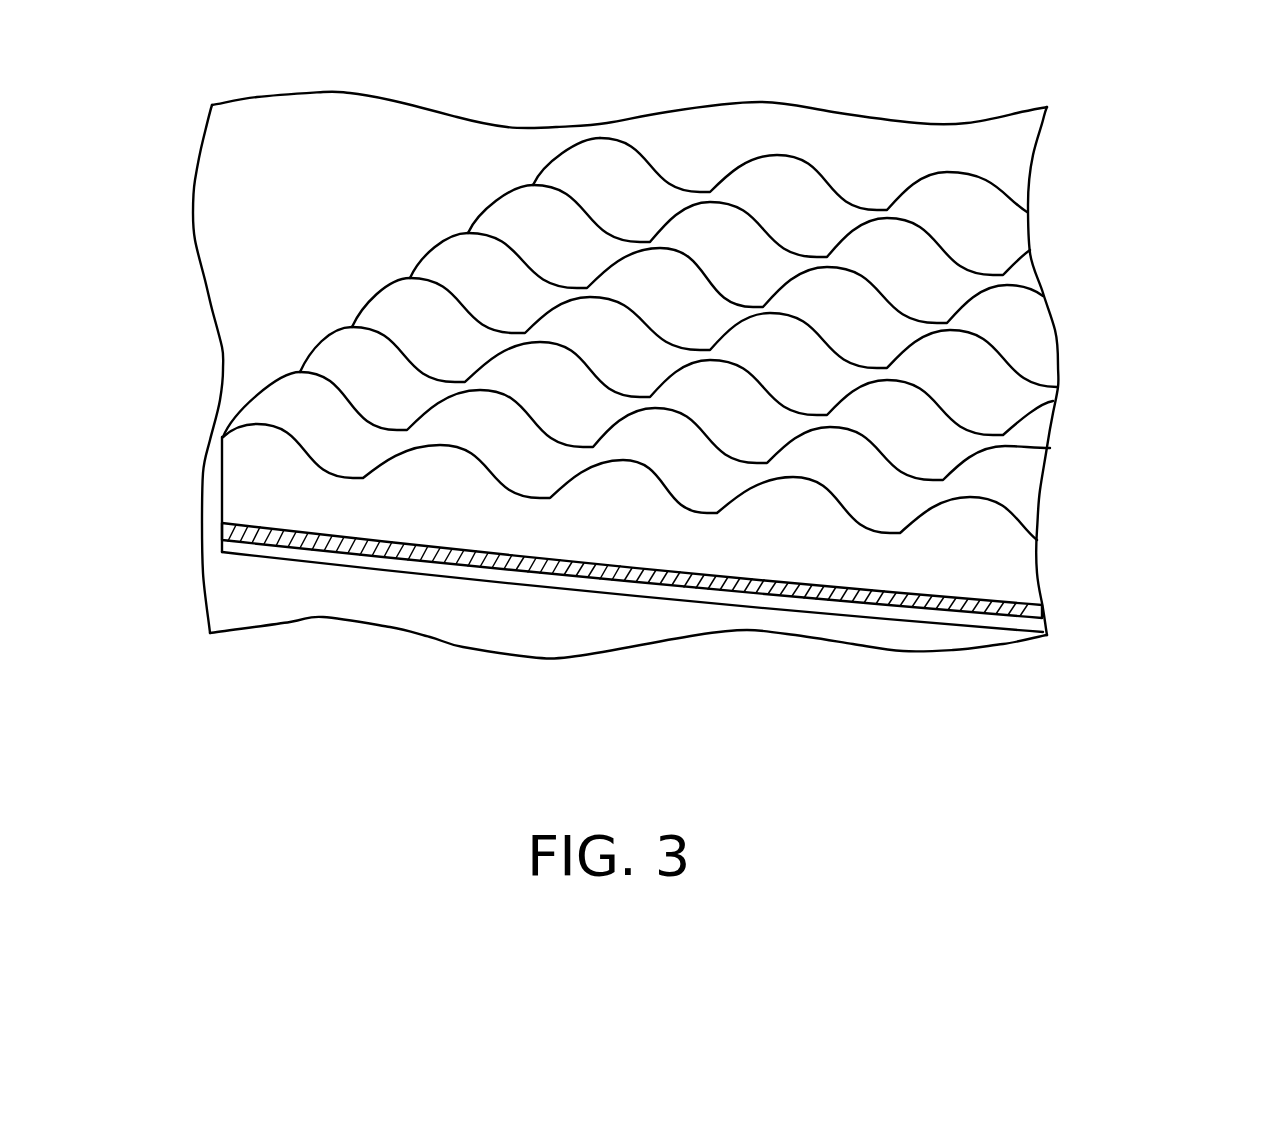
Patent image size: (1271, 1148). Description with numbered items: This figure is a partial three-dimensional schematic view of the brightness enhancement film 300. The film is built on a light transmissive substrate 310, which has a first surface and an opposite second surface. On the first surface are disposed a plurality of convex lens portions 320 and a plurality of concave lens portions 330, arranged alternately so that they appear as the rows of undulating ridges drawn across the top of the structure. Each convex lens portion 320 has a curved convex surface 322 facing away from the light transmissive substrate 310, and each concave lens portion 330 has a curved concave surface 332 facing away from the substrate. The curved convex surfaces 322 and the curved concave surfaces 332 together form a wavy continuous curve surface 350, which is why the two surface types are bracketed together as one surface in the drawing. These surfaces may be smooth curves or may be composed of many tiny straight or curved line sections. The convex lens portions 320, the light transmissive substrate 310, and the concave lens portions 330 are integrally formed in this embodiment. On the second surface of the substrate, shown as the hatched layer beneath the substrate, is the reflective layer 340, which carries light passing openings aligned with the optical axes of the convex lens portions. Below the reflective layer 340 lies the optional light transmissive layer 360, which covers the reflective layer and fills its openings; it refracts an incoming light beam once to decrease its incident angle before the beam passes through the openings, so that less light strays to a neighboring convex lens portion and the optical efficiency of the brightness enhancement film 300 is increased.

The brightness enhancement film 300 is at (1088, 435).
The light transmissive substrate 310 is at (233, 507).
The convex lens portions 320 is at (257, 438).
The curved convex surface 322 is at (304, 385).
The concave lens portions 330 is at (353, 478).
The curved concave surface 332 is at (365, 457).
The reflective layer 340 is at (1050, 613).
The wavy continuous curve surface 350 is at (85, 203).
The light transmissive layer 360 is at (255, 550).